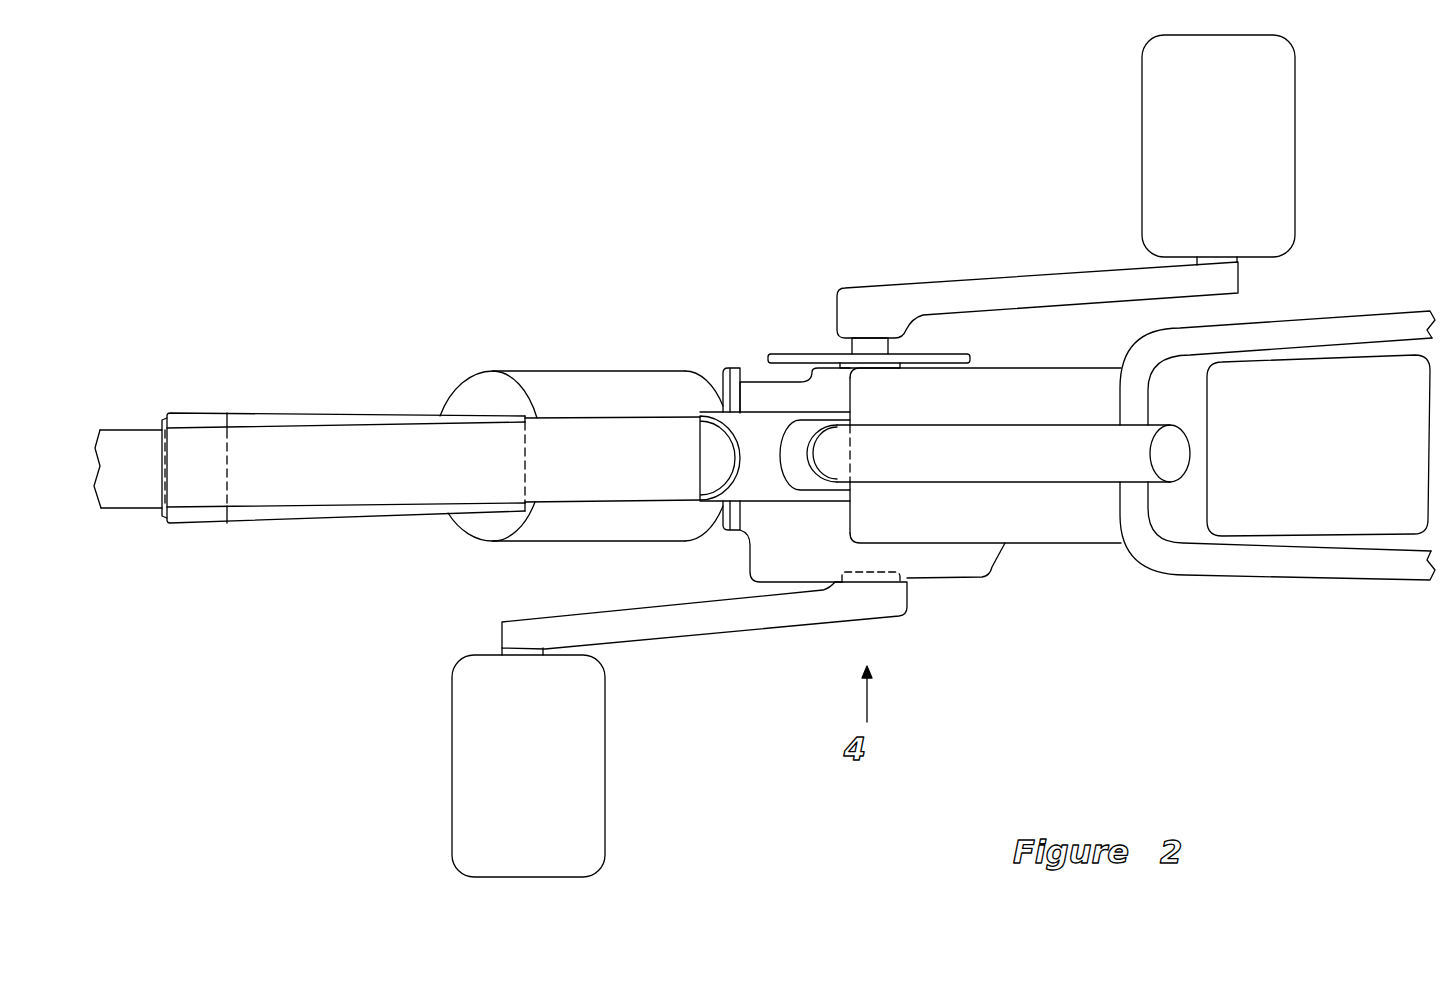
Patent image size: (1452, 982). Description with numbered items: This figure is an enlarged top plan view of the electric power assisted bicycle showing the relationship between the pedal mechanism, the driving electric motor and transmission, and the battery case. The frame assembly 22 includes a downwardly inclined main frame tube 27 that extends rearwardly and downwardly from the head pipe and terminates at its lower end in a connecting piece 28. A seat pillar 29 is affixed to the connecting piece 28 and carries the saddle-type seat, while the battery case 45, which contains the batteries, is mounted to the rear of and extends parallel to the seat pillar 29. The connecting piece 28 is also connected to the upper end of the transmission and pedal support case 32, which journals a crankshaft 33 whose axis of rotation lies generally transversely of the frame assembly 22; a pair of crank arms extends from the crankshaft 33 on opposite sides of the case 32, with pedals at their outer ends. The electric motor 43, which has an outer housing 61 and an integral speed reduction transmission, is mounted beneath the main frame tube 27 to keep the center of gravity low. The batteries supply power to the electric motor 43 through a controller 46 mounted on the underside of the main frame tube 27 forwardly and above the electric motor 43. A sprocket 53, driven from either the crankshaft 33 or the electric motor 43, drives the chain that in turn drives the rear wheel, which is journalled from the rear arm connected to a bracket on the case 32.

The frame assembly 22 is at (597, 421).
The main frame tube 27 is at (645, 418).
The connecting piece 28 is at (753, 427).
The seat pillar 29 is at (1008, 477).
The transmission and pedal support case 32 is at (953, 572).
The crankshaft 33 is at (888, 343).
The electric motor 43 is at (535, 550).
The battery case 45 is at (1098, 558).
The controller 46 is at (335, 396).
The sprocket 53 is at (782, 353).
The outer housing 61 is at (472, 528).